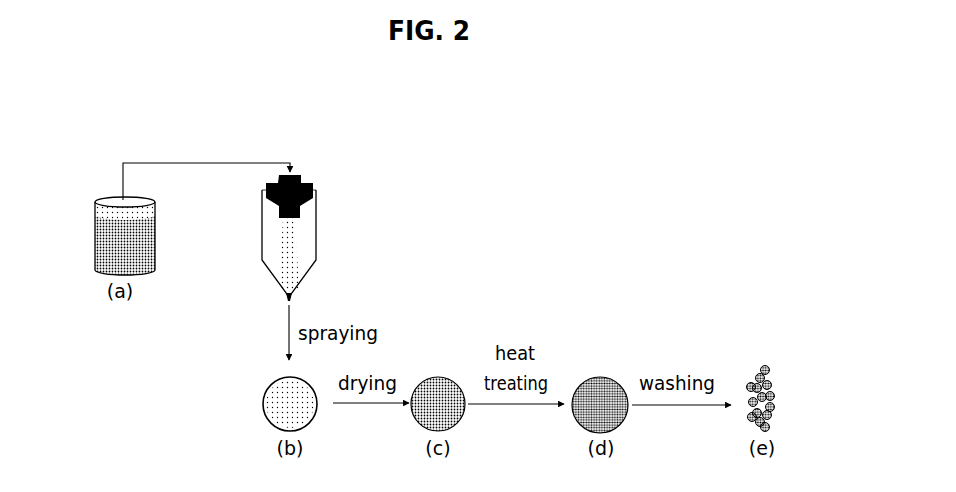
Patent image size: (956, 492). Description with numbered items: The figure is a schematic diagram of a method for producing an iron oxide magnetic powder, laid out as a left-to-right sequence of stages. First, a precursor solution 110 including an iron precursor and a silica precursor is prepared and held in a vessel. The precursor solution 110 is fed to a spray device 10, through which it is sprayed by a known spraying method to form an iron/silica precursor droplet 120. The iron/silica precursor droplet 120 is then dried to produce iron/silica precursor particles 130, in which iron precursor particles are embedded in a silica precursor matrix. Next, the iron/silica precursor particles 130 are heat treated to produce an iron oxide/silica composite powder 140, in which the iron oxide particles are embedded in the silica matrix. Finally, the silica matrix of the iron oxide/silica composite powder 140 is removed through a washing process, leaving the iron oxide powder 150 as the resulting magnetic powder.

The precursor solution 110 is at (150, 238).
The spray device 10 is at (305, 237).
The iron/silica precursor droplet 120 is at (264, 402).
The iron/silica precursor particles 130 is at (435, 368).
The iron oxide/silica composite powder 140 is at (590, 366).
The iron oxide powder 150 is at (749, 363).